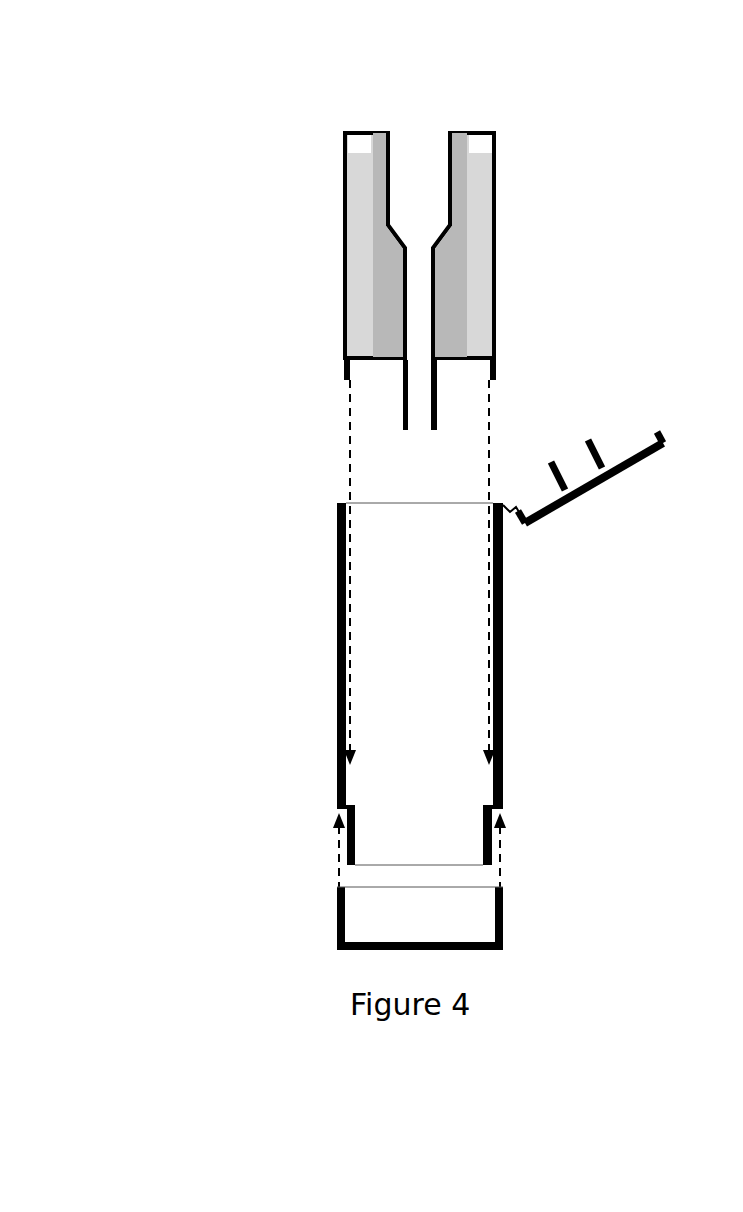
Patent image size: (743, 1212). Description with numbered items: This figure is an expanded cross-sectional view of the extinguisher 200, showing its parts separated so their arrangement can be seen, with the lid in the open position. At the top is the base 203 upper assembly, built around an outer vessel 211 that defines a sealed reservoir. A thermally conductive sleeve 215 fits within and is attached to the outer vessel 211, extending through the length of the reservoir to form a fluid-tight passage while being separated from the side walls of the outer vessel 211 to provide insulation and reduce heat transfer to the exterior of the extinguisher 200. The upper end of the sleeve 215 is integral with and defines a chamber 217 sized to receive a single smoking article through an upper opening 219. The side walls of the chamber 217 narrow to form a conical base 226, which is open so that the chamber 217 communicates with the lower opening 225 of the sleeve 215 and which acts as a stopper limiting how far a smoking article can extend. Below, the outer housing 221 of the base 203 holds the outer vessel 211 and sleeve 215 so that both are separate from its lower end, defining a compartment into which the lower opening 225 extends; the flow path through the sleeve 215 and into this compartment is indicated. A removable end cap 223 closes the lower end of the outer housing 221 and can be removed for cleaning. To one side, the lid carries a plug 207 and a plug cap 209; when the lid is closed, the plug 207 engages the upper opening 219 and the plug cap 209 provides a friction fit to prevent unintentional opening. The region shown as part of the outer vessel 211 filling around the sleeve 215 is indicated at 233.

The extinguisher 200 is at (296, 185).
The base 203 is at (441, 684).
The plug 207 is at (592, 436).
The plug cap 209 is at (608, 430).
The outer vessel 211 is at (428, 280).
The thermally conductive sleeve 215 is at (396, 380).
The chamber 217 is at (443, 209).
The upper opening 219 is at (434, 150).
The outer housing 221 is at (337, 658).
The removable end cap 223 is at (340, 922).
The lower opening 225 is at (395, 438).
The conical base 226 is at (392, 239).
The reservoir material 233 is at (363, 337).